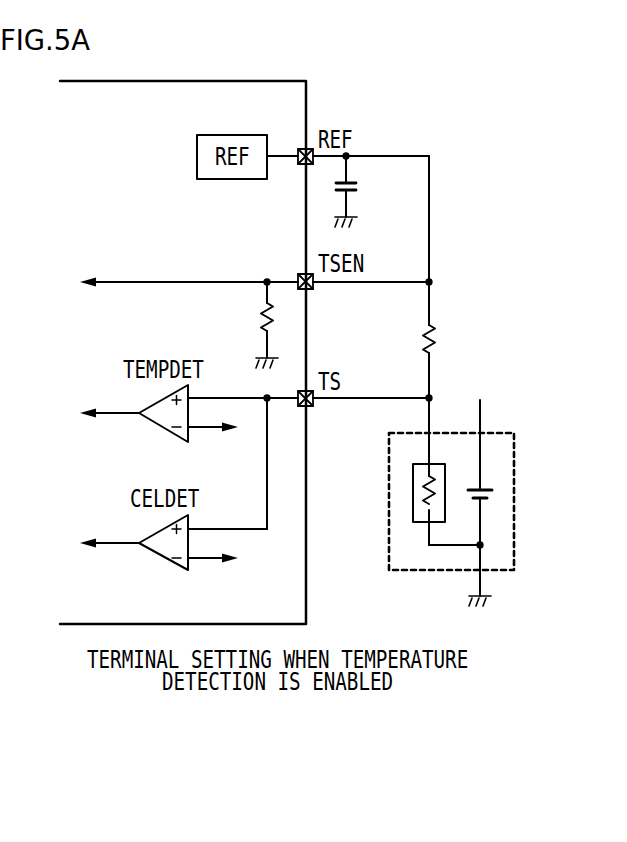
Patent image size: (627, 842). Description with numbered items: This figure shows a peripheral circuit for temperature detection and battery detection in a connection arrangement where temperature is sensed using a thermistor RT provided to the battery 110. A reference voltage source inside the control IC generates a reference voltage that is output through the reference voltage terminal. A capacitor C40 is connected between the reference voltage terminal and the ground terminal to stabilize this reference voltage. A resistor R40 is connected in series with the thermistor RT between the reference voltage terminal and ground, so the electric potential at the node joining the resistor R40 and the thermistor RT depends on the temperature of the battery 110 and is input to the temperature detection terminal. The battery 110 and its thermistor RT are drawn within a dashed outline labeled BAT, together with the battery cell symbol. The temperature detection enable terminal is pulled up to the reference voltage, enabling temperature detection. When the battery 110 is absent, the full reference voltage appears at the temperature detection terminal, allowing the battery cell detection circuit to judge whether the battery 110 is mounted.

The battery 110 is at (462, 503).
The thermistor RT is at (413, 491).
The battery BAT is at (514, 478).
The capacitor C40 is at (365, 191).
The resistor R40 is at (449, 339).